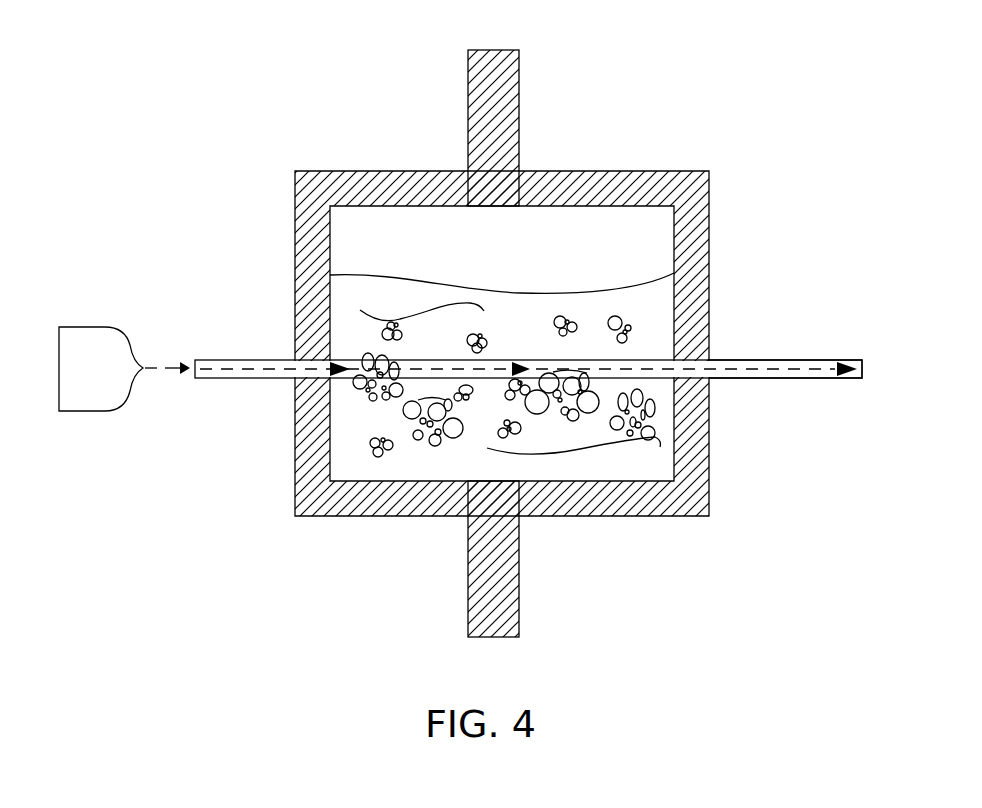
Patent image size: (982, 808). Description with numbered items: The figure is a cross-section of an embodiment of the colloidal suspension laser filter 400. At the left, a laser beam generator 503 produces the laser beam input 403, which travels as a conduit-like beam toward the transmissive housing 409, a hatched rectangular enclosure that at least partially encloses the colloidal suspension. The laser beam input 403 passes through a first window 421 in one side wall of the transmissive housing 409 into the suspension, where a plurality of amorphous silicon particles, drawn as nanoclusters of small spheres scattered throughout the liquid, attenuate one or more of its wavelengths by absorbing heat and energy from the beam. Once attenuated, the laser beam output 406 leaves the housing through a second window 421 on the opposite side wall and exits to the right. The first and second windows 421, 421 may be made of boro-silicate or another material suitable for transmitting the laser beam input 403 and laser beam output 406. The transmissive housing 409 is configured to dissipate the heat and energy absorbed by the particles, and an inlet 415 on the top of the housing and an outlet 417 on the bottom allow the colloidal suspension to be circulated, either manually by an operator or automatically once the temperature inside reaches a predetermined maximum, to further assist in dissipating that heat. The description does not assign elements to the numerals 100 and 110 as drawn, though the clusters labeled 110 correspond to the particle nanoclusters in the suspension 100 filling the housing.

The colloidal suspension laser filter 400 is at (275, 97).
The transmissive housing 409 is at (623, 171).
The windows 421 is at (709, 270).
The inlet 415 is at (468, 78).
The outlet 417 is at (520, 612).
The laser beam input 403 is at (210, 360).
The laser beam output 406 is at (750, 378).
The laser beam generator 503 is at (78, 327).
The medium 100 is at (353, 465).
The particles 110 is at (482, 351).